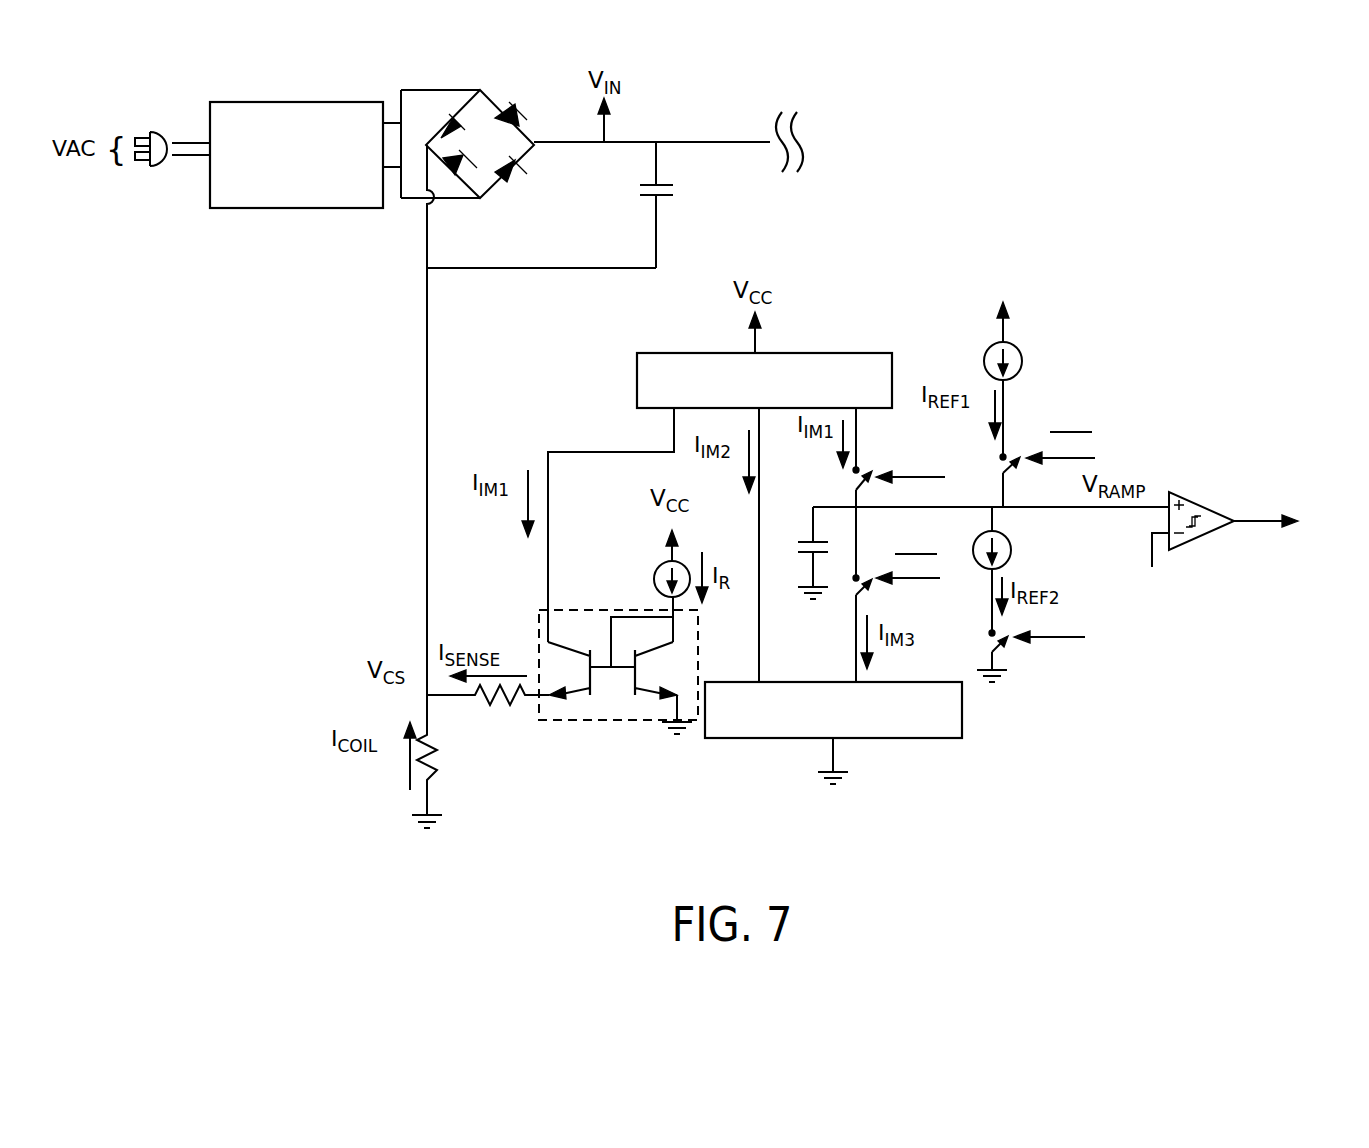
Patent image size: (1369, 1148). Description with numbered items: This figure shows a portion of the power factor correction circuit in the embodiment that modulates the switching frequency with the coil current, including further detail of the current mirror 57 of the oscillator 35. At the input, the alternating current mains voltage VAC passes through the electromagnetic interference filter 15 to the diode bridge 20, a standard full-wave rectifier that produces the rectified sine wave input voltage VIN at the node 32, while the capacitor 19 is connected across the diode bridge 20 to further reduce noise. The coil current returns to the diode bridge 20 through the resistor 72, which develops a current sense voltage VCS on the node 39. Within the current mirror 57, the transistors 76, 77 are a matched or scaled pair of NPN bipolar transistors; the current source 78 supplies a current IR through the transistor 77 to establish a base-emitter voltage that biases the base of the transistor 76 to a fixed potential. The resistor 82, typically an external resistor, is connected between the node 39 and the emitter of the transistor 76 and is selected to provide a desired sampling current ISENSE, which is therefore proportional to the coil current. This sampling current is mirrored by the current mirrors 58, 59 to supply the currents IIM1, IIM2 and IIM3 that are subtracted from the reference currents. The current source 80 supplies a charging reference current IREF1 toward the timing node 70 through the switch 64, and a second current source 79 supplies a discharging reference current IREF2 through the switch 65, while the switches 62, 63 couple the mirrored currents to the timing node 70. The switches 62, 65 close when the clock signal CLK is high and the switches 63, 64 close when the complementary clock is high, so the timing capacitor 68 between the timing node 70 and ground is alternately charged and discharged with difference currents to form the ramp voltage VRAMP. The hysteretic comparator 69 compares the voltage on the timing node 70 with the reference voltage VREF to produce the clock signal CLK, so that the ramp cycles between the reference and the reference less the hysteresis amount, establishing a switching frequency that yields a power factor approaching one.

The electromagnetic interference filter 15 is at (255, 213).
The diode bridge 20 is at (511, 197).
The node 32 is at (676, 140).
The capacitor 19 is at (676, 188).
The node 39 is at (427, 603).
The current mirror 58 is at (645, 353).
The current mirror 59 is at (718, 738).
The current mirror 57 is at (532, 620).
The transistor 76 is at (586, 700).
The transistor 77 is at (646, 700).
The current source 78 is at (656, 565).
The resistor 82 is at (489, 707).
The resistor 72 is at (445, 770).
The switch 62 is at (848, 483).
The switch 63 is at (851, 590).
The switch 64 is at (990, 474).
The switch 65 is at (985, 643).
The timing capacitor 68 is at (800, 557).
The comparator 69 is at (1205, 506).
The timing node 70 is at (1102, 507).
The current source 79 is at (985, 353).
The current source 80 is at (980, 538).
The oscillator 35 is at (1134, 657).